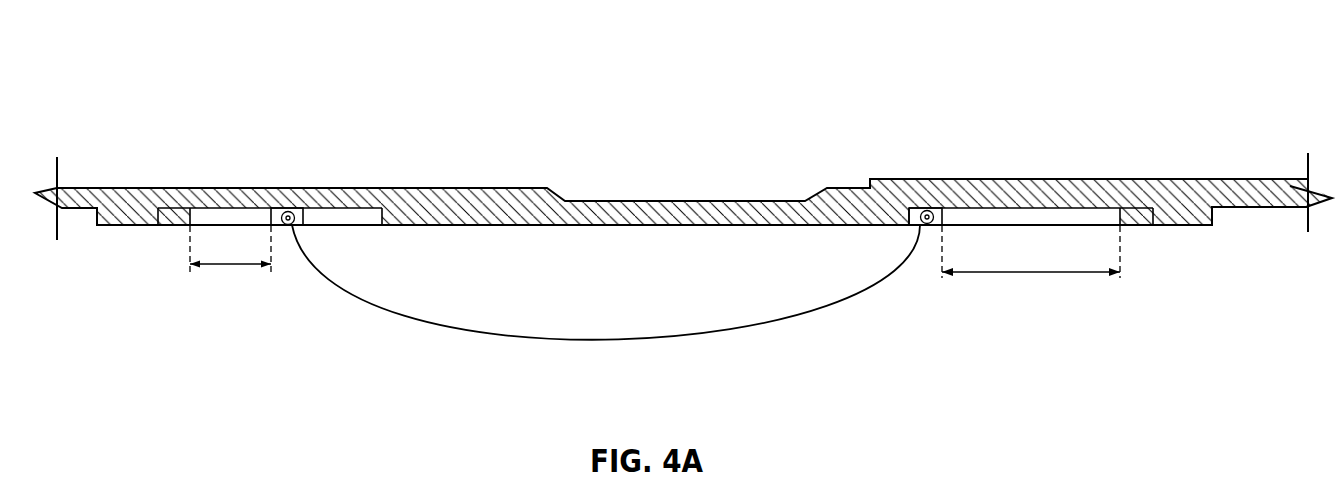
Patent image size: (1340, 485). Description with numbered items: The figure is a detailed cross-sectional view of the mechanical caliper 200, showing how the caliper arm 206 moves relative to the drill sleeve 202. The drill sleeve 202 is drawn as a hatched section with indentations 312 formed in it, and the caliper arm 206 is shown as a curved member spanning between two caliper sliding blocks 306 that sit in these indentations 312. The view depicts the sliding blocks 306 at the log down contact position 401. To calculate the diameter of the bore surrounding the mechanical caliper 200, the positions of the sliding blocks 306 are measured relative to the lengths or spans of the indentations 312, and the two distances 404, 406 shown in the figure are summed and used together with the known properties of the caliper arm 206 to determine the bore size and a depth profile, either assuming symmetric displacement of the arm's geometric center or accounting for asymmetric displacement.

The mechanical caliper 200 is at (683, 220).
The drill sleeve 202 is at (1193, 60).
The caliper arm 206 is at (580, 341).
The caliper sliding block 306 is at (930, 210).
The indentation 312 is at (1025, 215).
The log down contact position 401 is at (925, 226).
The distance 404 is at (1022, 274).
The distance 406 is at (228, 265).